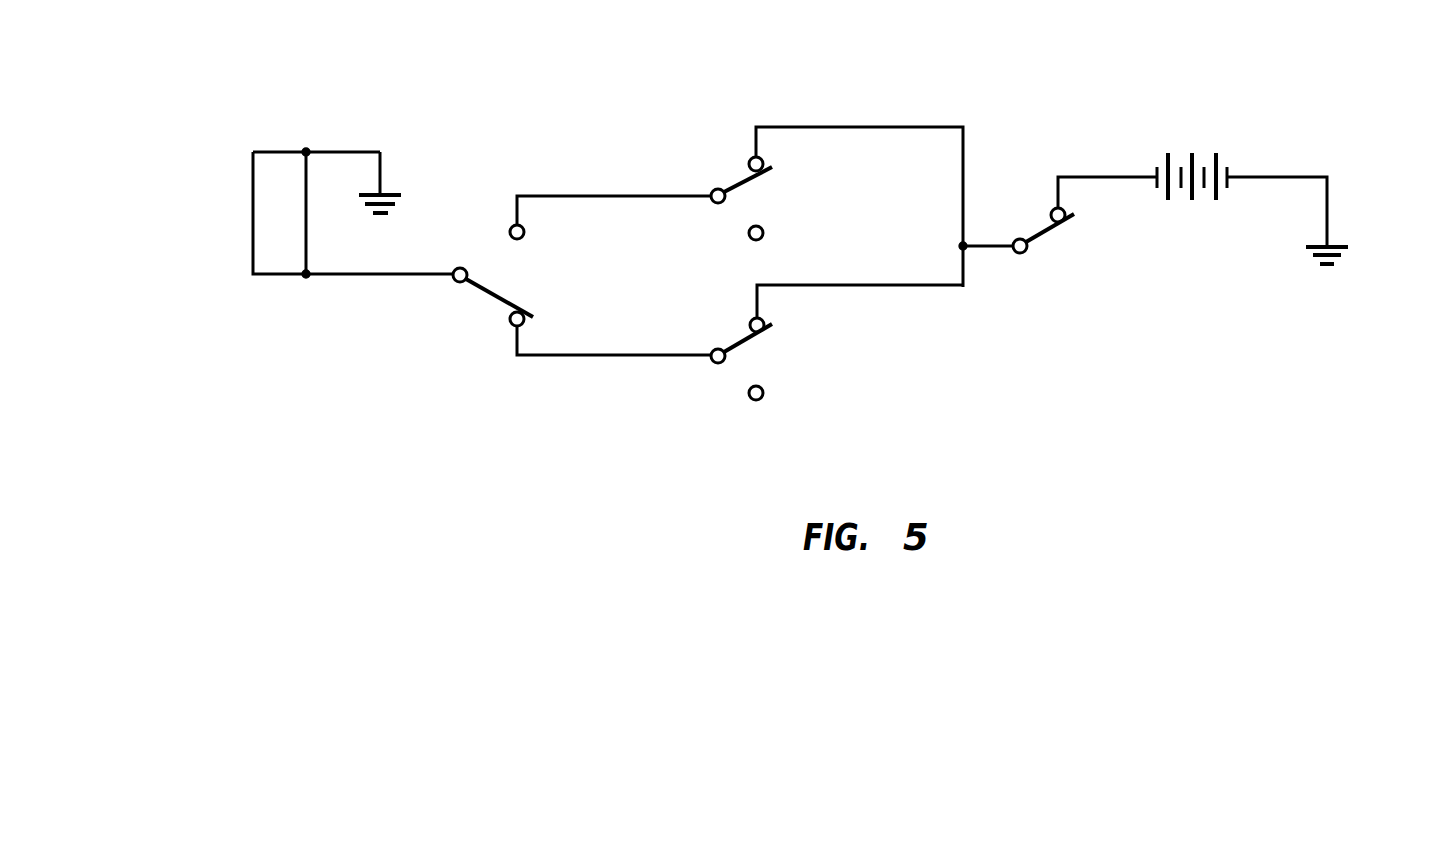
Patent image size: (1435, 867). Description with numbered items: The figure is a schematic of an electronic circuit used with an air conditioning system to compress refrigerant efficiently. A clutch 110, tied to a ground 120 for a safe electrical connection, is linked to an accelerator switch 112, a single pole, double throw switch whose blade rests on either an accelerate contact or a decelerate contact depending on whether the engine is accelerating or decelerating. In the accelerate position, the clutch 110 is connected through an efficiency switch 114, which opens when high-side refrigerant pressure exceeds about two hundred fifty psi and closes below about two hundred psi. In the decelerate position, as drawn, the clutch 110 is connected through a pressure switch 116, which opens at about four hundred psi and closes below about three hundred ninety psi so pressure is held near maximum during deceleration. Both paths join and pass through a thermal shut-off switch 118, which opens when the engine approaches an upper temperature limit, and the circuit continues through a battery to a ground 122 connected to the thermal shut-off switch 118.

The clutch 110 is at (232, 208).
The accelerator switch 112 is at (499, 322).
The efficiency switch 114 is at (703, 158).
The pressure switch 116 is at (784, 350).
The thermal shut-off switch 118 is at (1031, 214).
The ground 120 is at (392, 193).
The ground 122 is at (1337, 243).